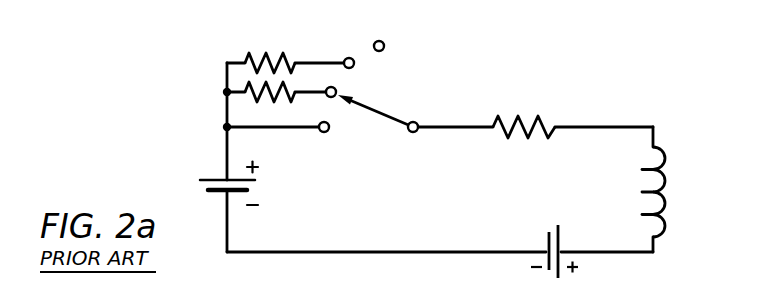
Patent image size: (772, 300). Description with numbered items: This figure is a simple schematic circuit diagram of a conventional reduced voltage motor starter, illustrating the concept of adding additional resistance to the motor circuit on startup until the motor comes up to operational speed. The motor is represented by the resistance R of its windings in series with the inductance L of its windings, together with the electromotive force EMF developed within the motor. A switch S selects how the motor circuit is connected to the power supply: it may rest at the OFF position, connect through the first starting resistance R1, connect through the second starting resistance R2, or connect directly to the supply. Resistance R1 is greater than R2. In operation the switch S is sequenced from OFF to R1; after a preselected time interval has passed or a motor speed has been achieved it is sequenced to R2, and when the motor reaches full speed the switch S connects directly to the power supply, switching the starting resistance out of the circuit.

The first starting resistance R1 is at (268, 58).
The second starting resistance R2 is at (268, 98).
The resistance of the motor windings R is at (525, 120).
The inductance of the motor windings L is at (668, 185).
The switch S is at (378, 133).
The OFF position OFF is at (395, 36).
The electromotive force EMF is at (554, 238).